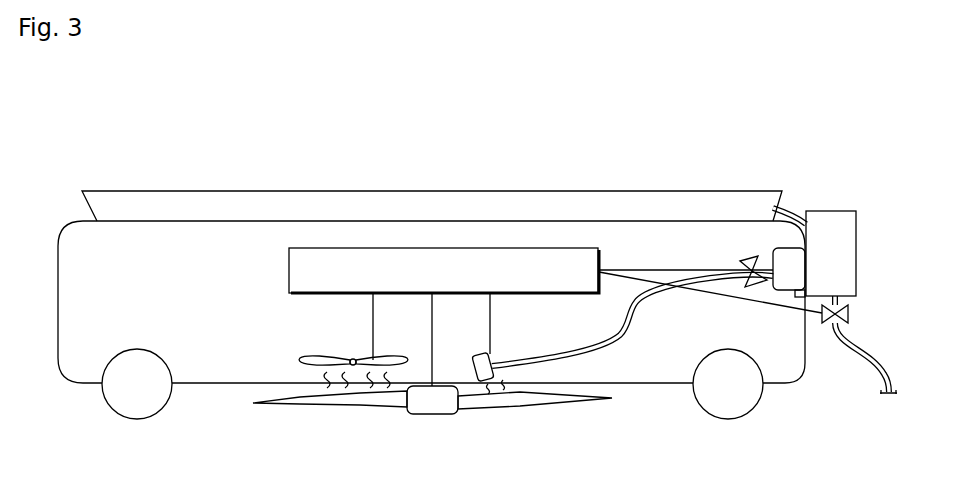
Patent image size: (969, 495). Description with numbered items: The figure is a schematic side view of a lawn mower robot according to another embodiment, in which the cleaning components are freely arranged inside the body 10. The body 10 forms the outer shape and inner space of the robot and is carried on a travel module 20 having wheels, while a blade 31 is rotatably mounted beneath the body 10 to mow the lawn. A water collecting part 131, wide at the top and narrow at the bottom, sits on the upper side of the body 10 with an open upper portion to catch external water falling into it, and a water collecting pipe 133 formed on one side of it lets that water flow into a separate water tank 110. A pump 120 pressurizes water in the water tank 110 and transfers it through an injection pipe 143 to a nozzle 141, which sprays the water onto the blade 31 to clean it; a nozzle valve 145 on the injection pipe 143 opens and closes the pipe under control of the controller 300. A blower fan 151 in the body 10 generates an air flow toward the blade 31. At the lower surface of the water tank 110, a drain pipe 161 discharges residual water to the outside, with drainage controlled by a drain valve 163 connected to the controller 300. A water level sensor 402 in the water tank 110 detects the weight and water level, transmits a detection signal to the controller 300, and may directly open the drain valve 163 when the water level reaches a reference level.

The body 10 is at (70, 226).
The travel module 20 is at (108, 404).
The blade 31 is at (350, 400).
The water tank 110 is at (856, 240).
The pump 120 is at (795, 270).
The water collecting part 131 is at (683, 191).
The water collecting pipe 133 is at (778, 210).
The nozzle 141 is at (480, 354).
The injection pipe 143 is at (553, 355).
The nozzle valve 145 is at (752, 287).
The blower fan 151 is at (301, 359).
The drain pipe 161 is at (891, 383).
The drain valve 163 is at (848, 313).
The controller 300 is at (289, 270).
The water level sensor 402 is at (800, 298).